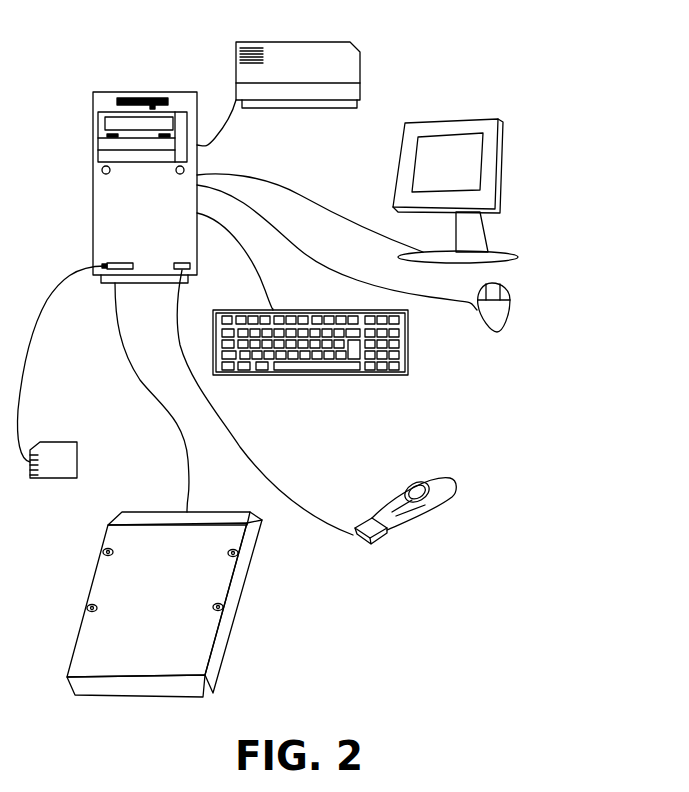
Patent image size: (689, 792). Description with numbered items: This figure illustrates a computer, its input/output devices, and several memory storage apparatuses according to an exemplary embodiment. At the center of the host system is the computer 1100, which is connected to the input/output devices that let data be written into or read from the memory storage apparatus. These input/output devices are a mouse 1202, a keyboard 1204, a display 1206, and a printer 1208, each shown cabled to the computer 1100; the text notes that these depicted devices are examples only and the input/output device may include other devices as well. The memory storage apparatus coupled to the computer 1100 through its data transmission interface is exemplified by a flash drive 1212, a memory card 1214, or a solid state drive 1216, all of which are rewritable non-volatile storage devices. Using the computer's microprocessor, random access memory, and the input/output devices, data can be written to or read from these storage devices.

The computer 1100 is at (147, 92).
The mouse 1202 is at (510, 310).
The keyboard 1204 is at (408, 352).
The display 1206 is at (457, 118).
The printer 1208 is at (290, 42).
The flash drive 1212 is at (402, 490).
The memory card 1214 is at (77, 452).
The solid state drive 1216 is at (216, 495).